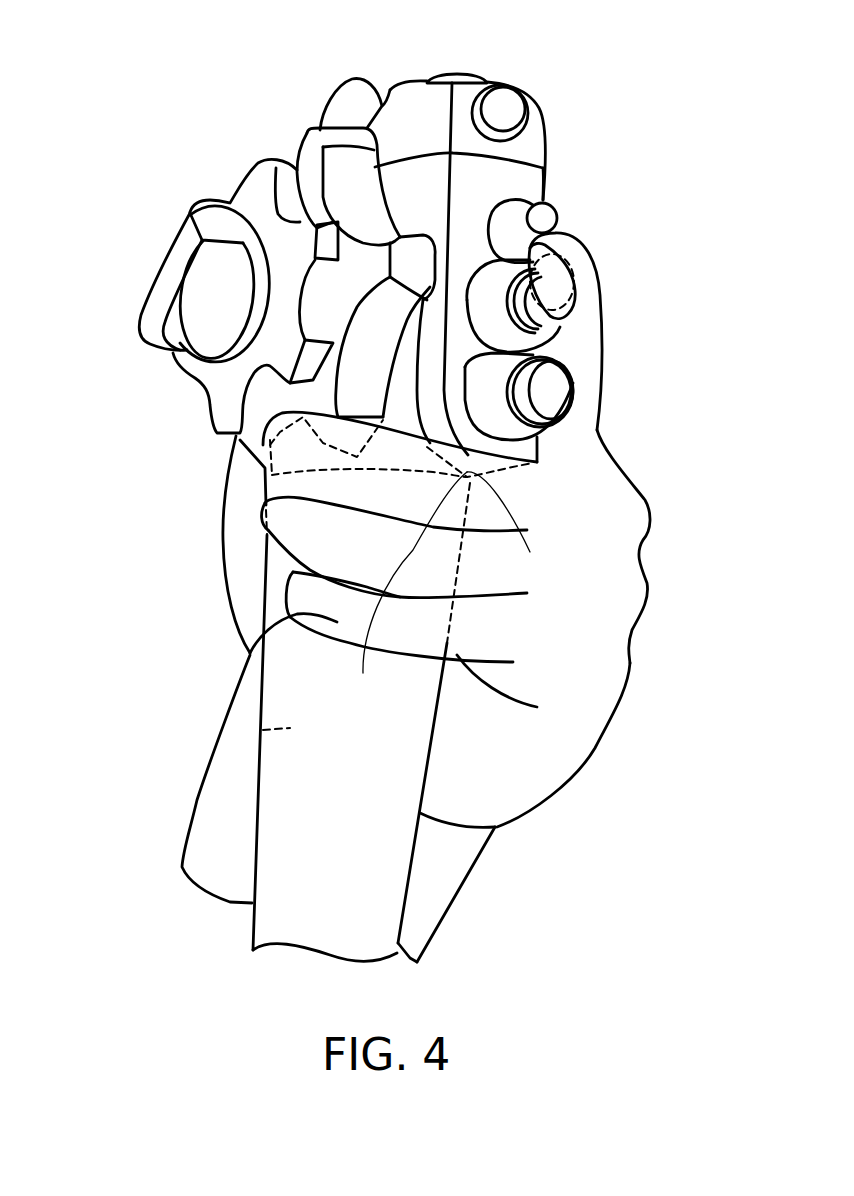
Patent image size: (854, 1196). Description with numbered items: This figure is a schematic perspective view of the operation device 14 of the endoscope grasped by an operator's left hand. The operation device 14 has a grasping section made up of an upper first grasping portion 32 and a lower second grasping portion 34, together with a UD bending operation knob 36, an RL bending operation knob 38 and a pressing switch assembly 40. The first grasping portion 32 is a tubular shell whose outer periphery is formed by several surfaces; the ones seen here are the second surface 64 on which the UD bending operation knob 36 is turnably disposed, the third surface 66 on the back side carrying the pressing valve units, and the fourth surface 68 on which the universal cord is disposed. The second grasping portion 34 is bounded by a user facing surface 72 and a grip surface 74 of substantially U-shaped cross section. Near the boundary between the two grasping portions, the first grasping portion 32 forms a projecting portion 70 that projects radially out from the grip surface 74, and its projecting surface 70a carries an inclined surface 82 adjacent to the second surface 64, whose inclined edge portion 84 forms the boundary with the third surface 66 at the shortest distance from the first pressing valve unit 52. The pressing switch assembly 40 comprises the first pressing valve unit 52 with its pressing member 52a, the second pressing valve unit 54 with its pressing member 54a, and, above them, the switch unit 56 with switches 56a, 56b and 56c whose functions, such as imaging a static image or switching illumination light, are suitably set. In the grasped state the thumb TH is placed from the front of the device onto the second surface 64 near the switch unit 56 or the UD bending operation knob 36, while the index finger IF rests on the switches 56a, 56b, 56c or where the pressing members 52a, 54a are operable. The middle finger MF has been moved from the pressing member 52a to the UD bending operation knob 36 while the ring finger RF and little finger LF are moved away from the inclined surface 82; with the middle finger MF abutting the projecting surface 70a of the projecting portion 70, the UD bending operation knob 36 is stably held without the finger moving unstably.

The operation device 14 is at (110, 642).
The first grasping portion 32 is at (517, 239).
The second grasping portion 34 is at (349, 701).
The UD bending operation knob 36 is at (300, 150).
The RL bending operation knob 38 is at (248, 173).
The pressing switch assembly 40 is at (663, 212).
The first pressing valve unit 52 is at (569, 395).
The pressing member 52a is at (558, 386).
The second pressing valve unit 54 is at (584, 303).
The pressing member 54a is at (573, 283).
The switch unit 56 is at (600, 98).
The switch 56a is at (543, 213).
The switch 56b is at (508, 112).
The switch 56c is at (454, 71).
The second surface 64 is at (397, 198).
The third surface 66 is at (520, 180).
The fourth surface 68 is at (543, 187).
The projecting portion 70 is at (429, 385).
The projecting surface 70a is at (512, 479).
The user facing surface 72 is at (263, 731).
The grip surface 74 is at (383, 848).
The inclined surface 82 is at (408, 587).
The inclined edge portion 84 is at (507, 527).
The thumb TH is at (338, 82).
The index finger IF is at (588, 243).
The middle finger MF is at (265, 475).
The ring finger RF is at (273, 550).
The little finger LF is at (250, 650).